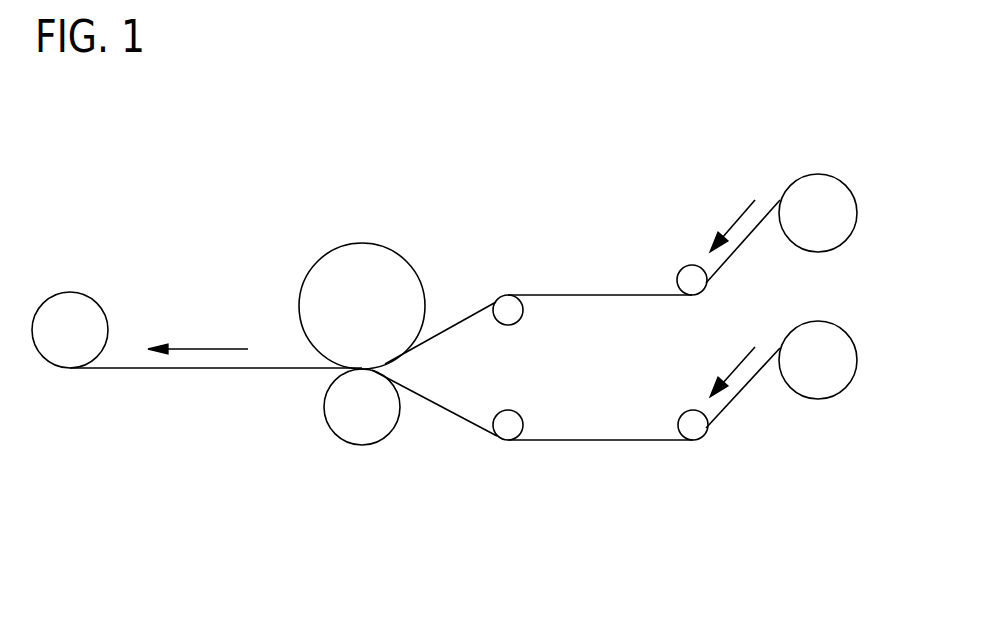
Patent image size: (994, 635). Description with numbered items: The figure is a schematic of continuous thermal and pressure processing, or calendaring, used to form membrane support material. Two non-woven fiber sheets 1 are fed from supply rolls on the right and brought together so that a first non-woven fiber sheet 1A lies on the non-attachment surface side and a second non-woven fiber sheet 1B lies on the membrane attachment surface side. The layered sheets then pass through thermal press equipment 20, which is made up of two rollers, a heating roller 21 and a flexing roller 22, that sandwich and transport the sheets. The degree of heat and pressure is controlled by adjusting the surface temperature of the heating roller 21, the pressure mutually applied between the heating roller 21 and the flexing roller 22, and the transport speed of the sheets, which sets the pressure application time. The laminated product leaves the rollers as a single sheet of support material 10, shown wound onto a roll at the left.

The non-woven fiber sheets 1 is at (614, 287).
The first non-woven fiber sheet 1A is at (635, 440).
The second non-woven fiber sheet 1B is at (560, 293).
The support material 10 is at (107, 317).
The thermal press equipment 20 is at (320, 387).
The heating roller 21 is at (302, 330).
The flexing roller 22 is at (333, 432).